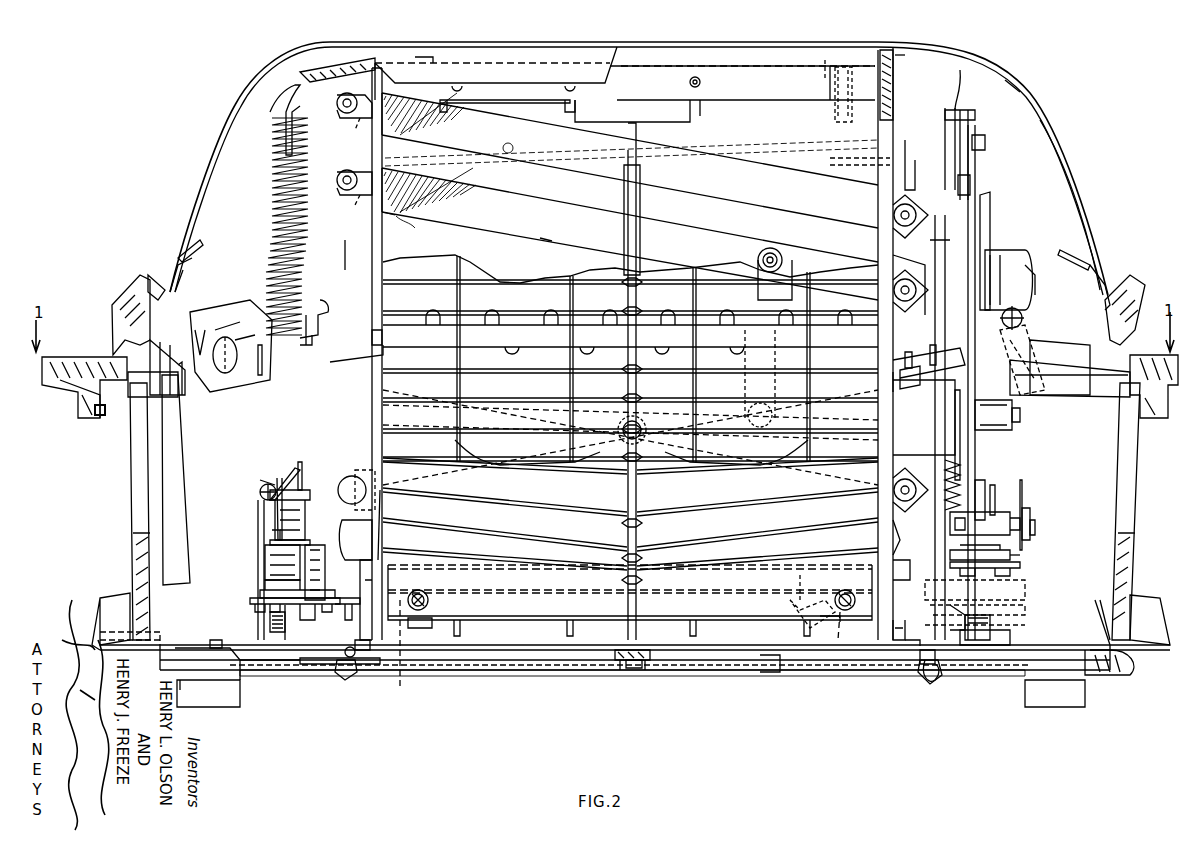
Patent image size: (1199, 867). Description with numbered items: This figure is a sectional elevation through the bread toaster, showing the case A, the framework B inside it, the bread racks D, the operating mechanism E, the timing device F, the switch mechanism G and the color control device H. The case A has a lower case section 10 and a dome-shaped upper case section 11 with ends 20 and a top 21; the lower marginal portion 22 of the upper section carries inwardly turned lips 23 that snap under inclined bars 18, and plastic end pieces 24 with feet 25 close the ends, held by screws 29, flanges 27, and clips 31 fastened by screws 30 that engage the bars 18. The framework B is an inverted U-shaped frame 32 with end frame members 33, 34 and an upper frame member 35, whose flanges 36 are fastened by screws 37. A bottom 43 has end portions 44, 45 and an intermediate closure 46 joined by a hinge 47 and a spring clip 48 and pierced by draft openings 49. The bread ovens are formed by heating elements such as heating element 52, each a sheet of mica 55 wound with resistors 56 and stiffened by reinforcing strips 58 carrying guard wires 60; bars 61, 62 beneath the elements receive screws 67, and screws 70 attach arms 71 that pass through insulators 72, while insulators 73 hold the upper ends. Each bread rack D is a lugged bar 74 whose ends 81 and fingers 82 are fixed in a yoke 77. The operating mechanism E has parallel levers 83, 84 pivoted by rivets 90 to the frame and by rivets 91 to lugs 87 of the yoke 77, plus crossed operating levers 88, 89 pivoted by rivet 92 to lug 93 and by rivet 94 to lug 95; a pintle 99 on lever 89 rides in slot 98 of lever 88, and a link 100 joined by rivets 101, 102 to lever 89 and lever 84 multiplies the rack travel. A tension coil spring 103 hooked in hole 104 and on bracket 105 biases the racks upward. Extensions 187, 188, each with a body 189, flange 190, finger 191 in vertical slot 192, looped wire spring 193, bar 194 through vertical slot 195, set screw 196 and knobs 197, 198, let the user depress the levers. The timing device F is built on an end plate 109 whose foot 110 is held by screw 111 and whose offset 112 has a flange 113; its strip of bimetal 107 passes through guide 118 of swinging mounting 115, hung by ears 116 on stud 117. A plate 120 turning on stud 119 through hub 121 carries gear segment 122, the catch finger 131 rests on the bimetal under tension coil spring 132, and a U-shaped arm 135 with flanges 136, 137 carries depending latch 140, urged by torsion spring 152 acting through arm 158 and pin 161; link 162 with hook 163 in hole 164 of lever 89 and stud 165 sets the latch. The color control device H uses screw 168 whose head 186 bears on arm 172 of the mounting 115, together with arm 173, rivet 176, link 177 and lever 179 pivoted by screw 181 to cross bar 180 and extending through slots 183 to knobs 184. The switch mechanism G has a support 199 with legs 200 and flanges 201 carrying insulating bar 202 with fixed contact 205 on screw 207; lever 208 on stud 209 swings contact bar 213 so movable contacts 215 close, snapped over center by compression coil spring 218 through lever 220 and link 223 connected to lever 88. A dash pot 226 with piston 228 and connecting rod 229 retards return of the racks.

The lower case section 10 is at (1110, 660).
The upper case section 11 is at (1078, 205).
The bar 18 is at (180, 262).
The ends 20 is at (222, 165).
The top 21 is at (655, 70).
The lower marginal portion 22 is at (1100, 262).
The inwardly turned lip 23 is at (150, 283).
The end piece 24 is at (133, 548).
The feet 25 is at (212, 695).
The upwardly extending flange 27 is at (250, 690).
The screws 29 is at (216, 638).
The screws 30 is at (120, 312).
The clip 31 is at (196, 262).
The frame 32 is at (898, 68).
The end frame member 33 is at (345, 62).
The end frame member 34 is at (896, 84).
The upper frame member 35 is at (752, 80).
The flanges 36 is at (345, 680).
The screws 37 is at (365, 655).
The bottom 43 is at (985, 670).
The end portion 44 is at (278, 672).
The end portion 45 is at (1000, 670).
The intermediate closure 46 is at (710, 668).
The hinge 47 is at (352, 660).
The spring clip 48 is at (935, 685).
The openings 49 is at (790, 672).
The heating element 52 is at (582, 575).
The sheet of mica 55 is at (560, 524).
The resistor 56 is at (490, 502).
The reinforcing strip 58 is at (740, 606).
The guard wire 60 is at (565, 415).
The bar 61 is at (436, 625).
The bar 62 is at (815, 622).
The screws 67 is at (798, 598).
The screws 70 is at (420, 612).
The arm 71 is at (635, 652).
The insulator 72 is at (362, 595).
The insulator 73 is at (856, 112).
The bar 74 is at (740, 337).
The yoke 77 is at (406, 228).
The ends 81 is at (365, 340).
The fingers 82 is at (350, 250).
The parallel lever 83 is at (748, 192).
The parallel lever 84 is at (685, 240).
The lugs 87 is at (356, 120).
The crossed operating lever 88 is at (335, 375).
The crossed operating lever 89 is at (918, 380).
The rivets 90 is at (895, 213).
The rivets 91 is at (337, 103).
The rivet 92 is at (906, 478).
The lug 93 is at (880, 468).
The rivet 94 is at (358, 470).
The lug 95 is at (356, 475).
The slot 98 is at (690, 447).
The pintle 99 is at (636, 422).
The link 100 is at (860, 285).
The rivet 101 is at (840, 378).
The rivet 102 is at (771, 253).
The tension coil spring 103 is at (278, 185).
The hole 104 is at (308, 338).
The bracket 105 is at (278, 100).
The strip of bimetal 107 is at (1010, 552).
The end plate 109 is at (938, 232).
The foot 110 is at (897, 640).
The screw 111 is at (910, 648).
The offset 112 is at (917, 182).
The flange 113 is at (890, 158).
The swinging mounting 115 is at (1036, 528).
The ears 116 is at (1018, 510).
The stud 117 is at (1030, 512).
The guide 118 is at (1022, 566).
The stud 119 is at (1012, 415).
The plate 120 is at (962, 440).
The hub 121 is at (1015, 420).
The gear segment 122 is at (990, 485).
The finger 131 is at (990, 530).
The tension coil spring 132 is at (962, 492).
The U-shaped arm 135 is at (970, 112).
The flange 136 is at (977, 116).
The flange 137 is at (952, 112).
The depending latch 140 is at (962, 90).
The torsion spring 152 is at (992, 210).
The arm 158 is at (978, 168).
The pin 161 is at (987, 145).
The link 162 is at (922, 268).
The hook 163 is at (905, 378).
The hole 164 is at (918, 352).
The stud 165 is at (972, 182).
The screw 168 is at (926, 668).
The arm 172 is at (812, 604).
The arm 173 is at (980, 645).
The rivet 176 is at (970, 620).
The link 177 is at (975, 650).
The lever 179 is at (498, 668).
The cross bar 180 is at (615, 660).
The screw 181 is at (638, 672).
The slots 183 is at (150, 632).
The knobs 184 is at (112, 605).
The head 186 is at (893, 527).
The extension 187 is at (235, 385).
The extension 188 is at (1070, 392).
The body 189 is at (235, 335).
The flange 190 is at (262, 300).
The finger 191 is at (205, 335).
The vertical slot 192 is at (175, 400).
The looped wire spring 193 is at (260, 378).
The bar 194 is at (95, 383).
The vertical slot 195 is at (135, 490).
The set screw 196 is at (96, 418).
The knob 197 is at (72, 358).
The knob 198 is at (1150, 420).
The support 199 is at (335, 520).
The legs 200 is at (380, 535).
The flanges 201 is at (282, 638).
The bar of insulating material 202 is at (262, 606).
The fixed contact 205 is at (262, 585).
The screw 207 is at (286, 640).
The lever 208 is at (268, 497).
The stud 209 is at (263, 560).
The swinging contact bar 213 is at (274, 520).
The movable contacts 215 is at (270, 540).
The compression coil spring 218 is at (266, 485).
The lever 220 is at (300, 462).
The link 223 is at (275, 488).
The dash pot 226 is at (995, 255).
The piston 228 is at (1030, 276).
The connecting rod 229 is at (1024, 318).
The case A is at (1022, 105).
The framework B is at (896, 108).
The bread rack D is at (525, 330).
The operating mechanism E is at (545, 240).
The timing device F is at (1022, 556).
The switch mechanism G is at (262, 482).
The color control device H is at (1025, 586).